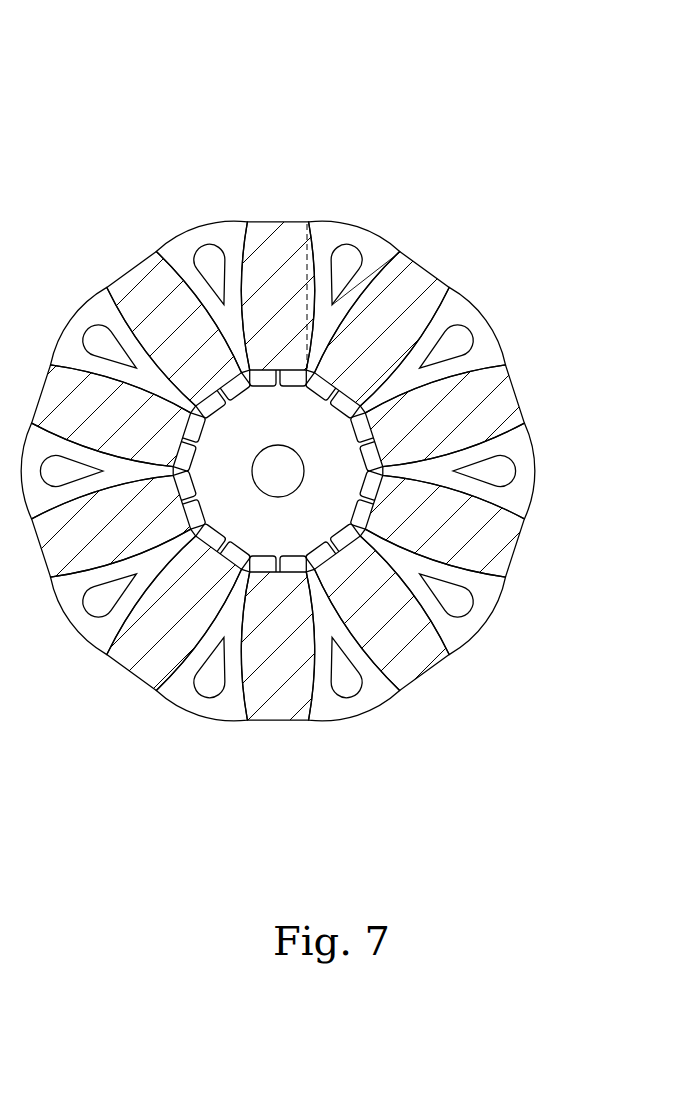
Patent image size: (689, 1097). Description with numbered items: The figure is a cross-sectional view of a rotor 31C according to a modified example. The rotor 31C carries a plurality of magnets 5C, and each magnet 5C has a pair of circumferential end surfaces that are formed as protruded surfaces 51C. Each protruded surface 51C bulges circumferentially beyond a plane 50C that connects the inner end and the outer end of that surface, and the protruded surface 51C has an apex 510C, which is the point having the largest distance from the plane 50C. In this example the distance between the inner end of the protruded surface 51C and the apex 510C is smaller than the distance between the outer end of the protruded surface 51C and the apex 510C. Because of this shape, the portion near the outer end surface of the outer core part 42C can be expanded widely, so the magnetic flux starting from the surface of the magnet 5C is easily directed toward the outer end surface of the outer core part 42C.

The rotor 31C is at (482, 128).
The magnet 5C is at (150, 662).
The plane 50C is at (307, 263).
The protruded surface 51C is at (242, 262).
The apex 510C is at (335, 263).
The outer core part 42C is at (503, 498).